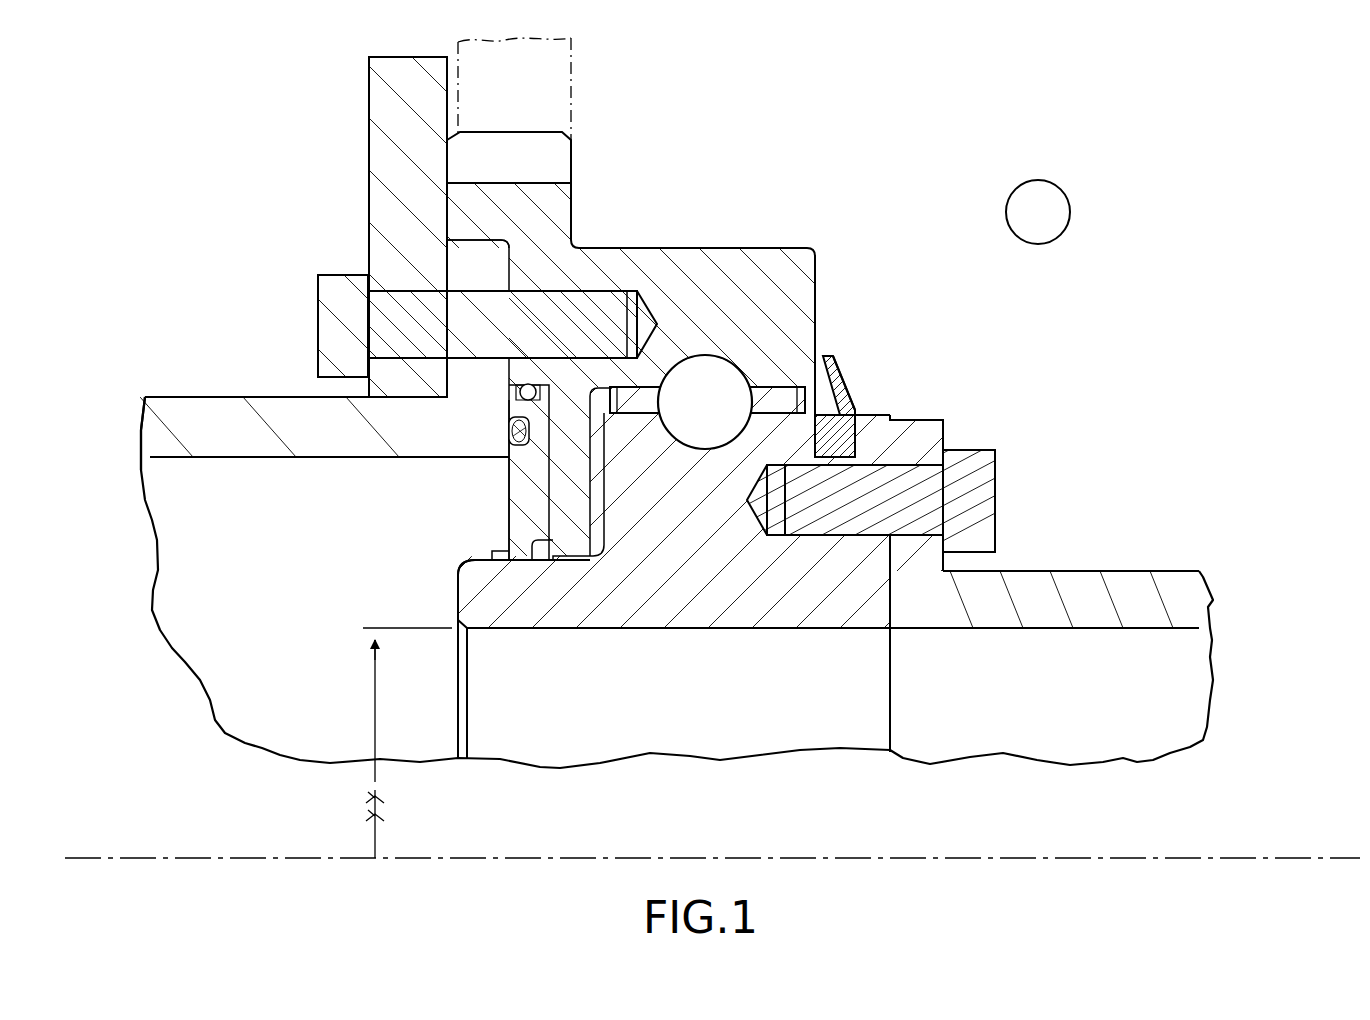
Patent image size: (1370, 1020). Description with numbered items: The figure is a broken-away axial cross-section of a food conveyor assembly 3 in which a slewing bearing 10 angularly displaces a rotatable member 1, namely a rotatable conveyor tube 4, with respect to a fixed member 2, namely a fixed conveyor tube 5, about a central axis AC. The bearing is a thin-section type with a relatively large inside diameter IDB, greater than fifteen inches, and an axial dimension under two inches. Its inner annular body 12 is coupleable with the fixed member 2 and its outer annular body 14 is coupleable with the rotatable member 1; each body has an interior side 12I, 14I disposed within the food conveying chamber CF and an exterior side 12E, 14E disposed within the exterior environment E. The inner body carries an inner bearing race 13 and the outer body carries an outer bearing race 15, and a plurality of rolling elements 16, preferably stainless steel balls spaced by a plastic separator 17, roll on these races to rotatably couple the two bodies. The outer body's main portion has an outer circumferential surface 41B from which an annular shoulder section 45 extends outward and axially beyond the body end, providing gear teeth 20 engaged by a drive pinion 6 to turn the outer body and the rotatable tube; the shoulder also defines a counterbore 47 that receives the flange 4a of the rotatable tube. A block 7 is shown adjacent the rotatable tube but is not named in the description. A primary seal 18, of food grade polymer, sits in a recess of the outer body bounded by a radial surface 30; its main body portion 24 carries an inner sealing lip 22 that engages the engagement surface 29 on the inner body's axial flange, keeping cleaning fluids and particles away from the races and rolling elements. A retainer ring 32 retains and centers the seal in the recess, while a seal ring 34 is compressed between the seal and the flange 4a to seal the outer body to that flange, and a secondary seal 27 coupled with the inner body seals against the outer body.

The rotatable member 1 is at (202, 358).
The fixed member 2 is at (1170, 553).
The food conveyor assembly 3 is at (1114, 422).
The rotatable conveyor tube 4 is at (162, 408).
The rotatable member flange 4a is at (463, 277).
The fixed conveyor tube 5 is at (1062, 577).
The drive pinion 6 is at (550, 72).
The block 7 is at (375, 90).
The slewing bearing 10 is at (826, 190).
The inner annular body 12 is at (897, 388).
The exterior side of inner annular body 12E is at (890, 418).
The interior side of inner annular body 12I is at (460, 594).
The inner bearing race 13 is at (713, 438).
The outer annular body 14 is at (668, 194).
The exterior side of outer annular body 14E is at (815, 272).
The interior side of outer annular body 14I is at (548, 488).
The outer bearing race 15 is at (740, 383).
The rolling elements 16 is at (748, 374).
The plastic separator 17 is at (777, 397).
The primary seal 18 is at (425, 506).
The gear teeth 20 is at (560, 152).
The inner sealing lip 22 is at (500, 553).
The main body portion of primary seal 24 is at (517, 467).
The secondary seal 27 is at (850, 376).
The engagement surface 29 is at (508, 558).
The radial surface of outer body seal recess 30 is at (540, 425).
The retainer ring 32 is at (530, 383).
The seal ring 34 is at (513, 432).
The outer circumferential surface of main body portion 41B is at (738, 248).
The annular shoulder section 45 is at (560, 213).
The counterbore 47 is at (468, 243).
The exterior environment E is at (1038, 212).
The inside diameter of slewing bearing IDB is at (403, 743).
The food conveying chamber CF is at (293, 722).
The central axis AC is at (1302, 856).